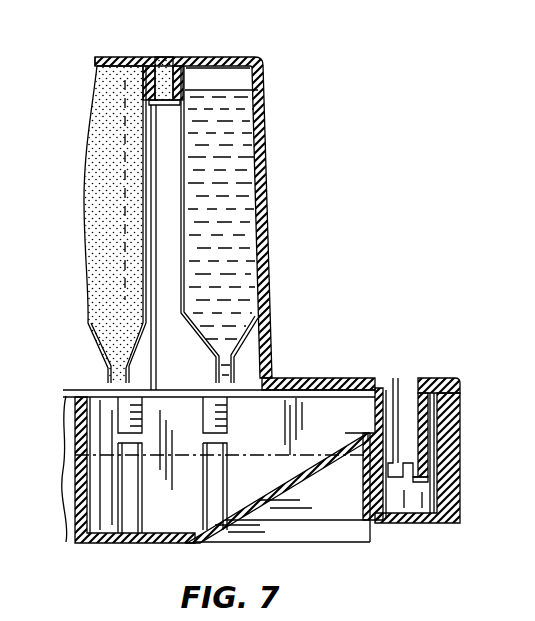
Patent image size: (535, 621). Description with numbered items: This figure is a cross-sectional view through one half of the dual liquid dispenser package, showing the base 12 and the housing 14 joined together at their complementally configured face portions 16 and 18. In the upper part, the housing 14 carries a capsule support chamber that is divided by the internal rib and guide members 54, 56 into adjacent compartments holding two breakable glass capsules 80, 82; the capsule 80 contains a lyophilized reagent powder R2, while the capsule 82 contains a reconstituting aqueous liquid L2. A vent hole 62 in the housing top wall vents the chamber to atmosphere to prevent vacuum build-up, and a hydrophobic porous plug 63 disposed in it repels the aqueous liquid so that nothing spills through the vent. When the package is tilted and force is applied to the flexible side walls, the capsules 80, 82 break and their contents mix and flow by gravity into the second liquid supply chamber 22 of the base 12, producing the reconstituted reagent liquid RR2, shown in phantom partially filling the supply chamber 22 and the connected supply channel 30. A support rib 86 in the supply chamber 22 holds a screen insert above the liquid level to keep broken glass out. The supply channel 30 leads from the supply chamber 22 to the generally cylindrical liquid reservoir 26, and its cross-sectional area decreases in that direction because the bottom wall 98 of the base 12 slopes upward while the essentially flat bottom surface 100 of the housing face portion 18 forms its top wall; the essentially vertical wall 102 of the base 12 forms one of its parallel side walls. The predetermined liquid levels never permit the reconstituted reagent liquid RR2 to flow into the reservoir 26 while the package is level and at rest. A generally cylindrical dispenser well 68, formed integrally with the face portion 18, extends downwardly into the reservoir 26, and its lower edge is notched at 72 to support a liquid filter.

The base 12 is at (462, 468).
The housing 14 is at (274, 277).
The face portion 16 is at (358, 388).
The face portion 18 is at (437, 376).
The second liquid supply chamber 22 is at (160, 522).
The second liquid reservoir 26 is at (415, 500).
The second liquid supply channel 30 is at (258, 478).
The internal rib and guide member 54 is at (187, 78).
The internal rib and guide member 56 is at (125, 170).
The vent hole 62 is at (158, 62).
The porous plug 63 is at (167, 60).
The dispenser well 68 is at (423, 423).
The notch 72 is at (417, 470).
The capsule 80 is at (100, 64).
The capsule 82 is at (262, 95).
The support rib 86 is at (143, 420).
The wall 98 is at (331, 458).
The bottom surface 100 is at (300, 388).
The wall 102 is at (388, 425).
The reagent powder R2 is at (100, 297).
The reconstituting liquid L2 is at (235, 203).
The reconstituted reagent liquid RR2 is at (314, 451).